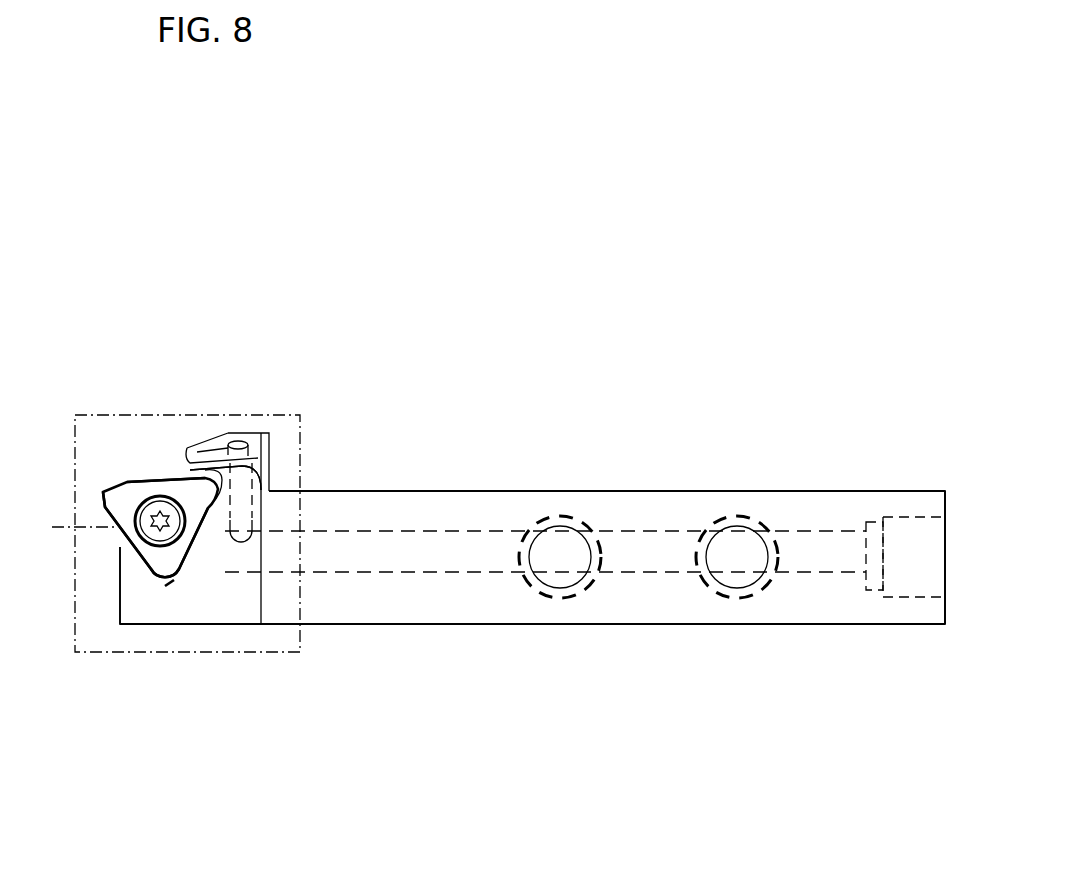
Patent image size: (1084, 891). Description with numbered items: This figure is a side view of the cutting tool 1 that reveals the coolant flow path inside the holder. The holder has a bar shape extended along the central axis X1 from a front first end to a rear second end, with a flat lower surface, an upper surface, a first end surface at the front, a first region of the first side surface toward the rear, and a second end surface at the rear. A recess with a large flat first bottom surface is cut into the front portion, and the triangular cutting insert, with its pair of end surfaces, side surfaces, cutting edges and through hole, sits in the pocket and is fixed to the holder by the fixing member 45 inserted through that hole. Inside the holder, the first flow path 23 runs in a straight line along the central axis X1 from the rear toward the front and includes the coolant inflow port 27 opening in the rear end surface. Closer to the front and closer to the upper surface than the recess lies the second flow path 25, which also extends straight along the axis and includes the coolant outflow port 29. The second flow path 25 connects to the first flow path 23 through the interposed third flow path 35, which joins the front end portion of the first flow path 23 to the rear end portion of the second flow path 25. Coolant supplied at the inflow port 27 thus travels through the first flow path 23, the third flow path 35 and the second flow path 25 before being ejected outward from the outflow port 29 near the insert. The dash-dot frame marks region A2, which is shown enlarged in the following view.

The cutting tool 1 is at (522, 425).
The first flow path 23 is at (503, 573).
The second flow path 25 is at (219, 450).
The coolant inflow port 27 is at (945, 540).
The coolant outflow port 29 is at (187, 457).
The third flow path 35 is at (253, 502).
The fixing member 45 is at (157, 532).
The region A2 is at (282, 415).
The central axis X1 is at (79, 545).